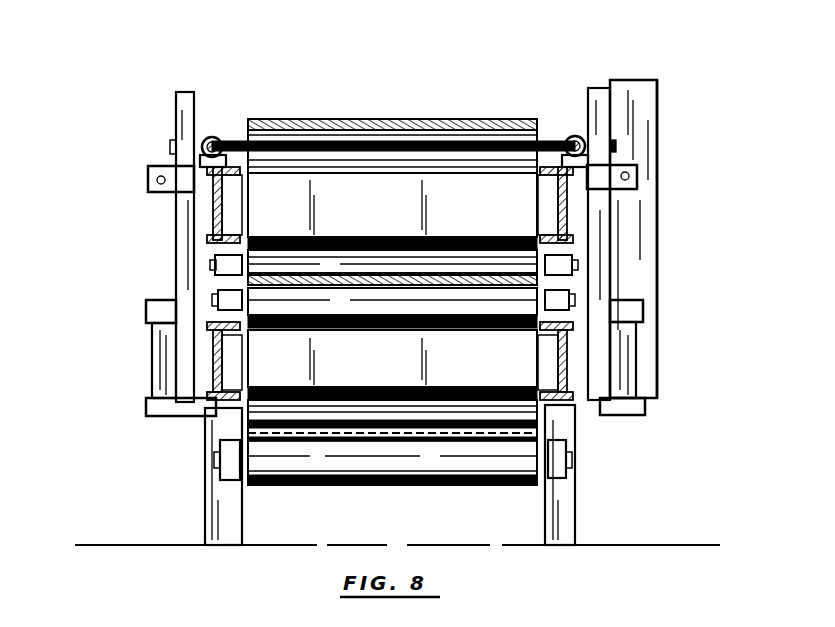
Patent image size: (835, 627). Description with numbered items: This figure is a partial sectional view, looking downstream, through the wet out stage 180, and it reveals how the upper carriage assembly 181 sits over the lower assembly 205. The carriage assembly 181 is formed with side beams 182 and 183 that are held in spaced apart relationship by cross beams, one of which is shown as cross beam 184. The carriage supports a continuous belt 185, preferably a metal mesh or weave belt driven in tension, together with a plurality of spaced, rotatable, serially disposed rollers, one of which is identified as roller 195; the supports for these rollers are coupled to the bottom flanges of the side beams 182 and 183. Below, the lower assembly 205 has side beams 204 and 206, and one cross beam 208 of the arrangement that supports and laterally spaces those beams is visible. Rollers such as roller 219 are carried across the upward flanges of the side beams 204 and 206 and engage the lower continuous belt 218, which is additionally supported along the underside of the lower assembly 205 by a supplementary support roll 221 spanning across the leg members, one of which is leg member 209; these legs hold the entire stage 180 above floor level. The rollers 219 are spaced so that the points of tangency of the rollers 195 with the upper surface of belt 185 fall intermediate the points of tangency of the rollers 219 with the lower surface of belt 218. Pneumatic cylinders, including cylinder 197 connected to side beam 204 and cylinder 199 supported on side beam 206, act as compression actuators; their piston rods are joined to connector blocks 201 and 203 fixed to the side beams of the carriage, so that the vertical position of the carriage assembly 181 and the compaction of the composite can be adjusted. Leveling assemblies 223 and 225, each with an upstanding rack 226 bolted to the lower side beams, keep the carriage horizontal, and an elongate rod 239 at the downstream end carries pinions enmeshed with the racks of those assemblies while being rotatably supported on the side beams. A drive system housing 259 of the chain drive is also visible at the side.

The wet out stage 180 is at (494, 78).
The upper carriage assembly 181 is at (742, 128).
The side beam 182 is at (560, 195).
The side beam 183 is at (226, 202).
The cross beam 184 is at (392, 212).
The continuous belt 185 is at (412, 118).
The roller 195 is at (442, 258).
The pneumatic cylinder 197 is at (625, 346).
The pneumatic cylinder 199 is at (156, 348).
The connector block 201 is at (628, 230).
The connector block 203 is at (172, 226).
The side beam 204 is at (560, 356).
The lower assembly 205 is at (122, 400).
The side beam 206 is at (226, 357).
The cross beam 208 is at (392, 365).
The leg member 209 is at (215, 500).
The continuous belt 218 is at (372, 437).
The roller 219 is at (472, 300).
The supplementary support roll 221 is at (446, 462).
The leveling assembly 223 is at (625, 75).
The leveling assembly 225 is at (172, 88).
The upstanding rack 226 is at (188, 100).
The elongate rod 239 is at (240, 135).
The drive system housing 259 is at (657, 182).